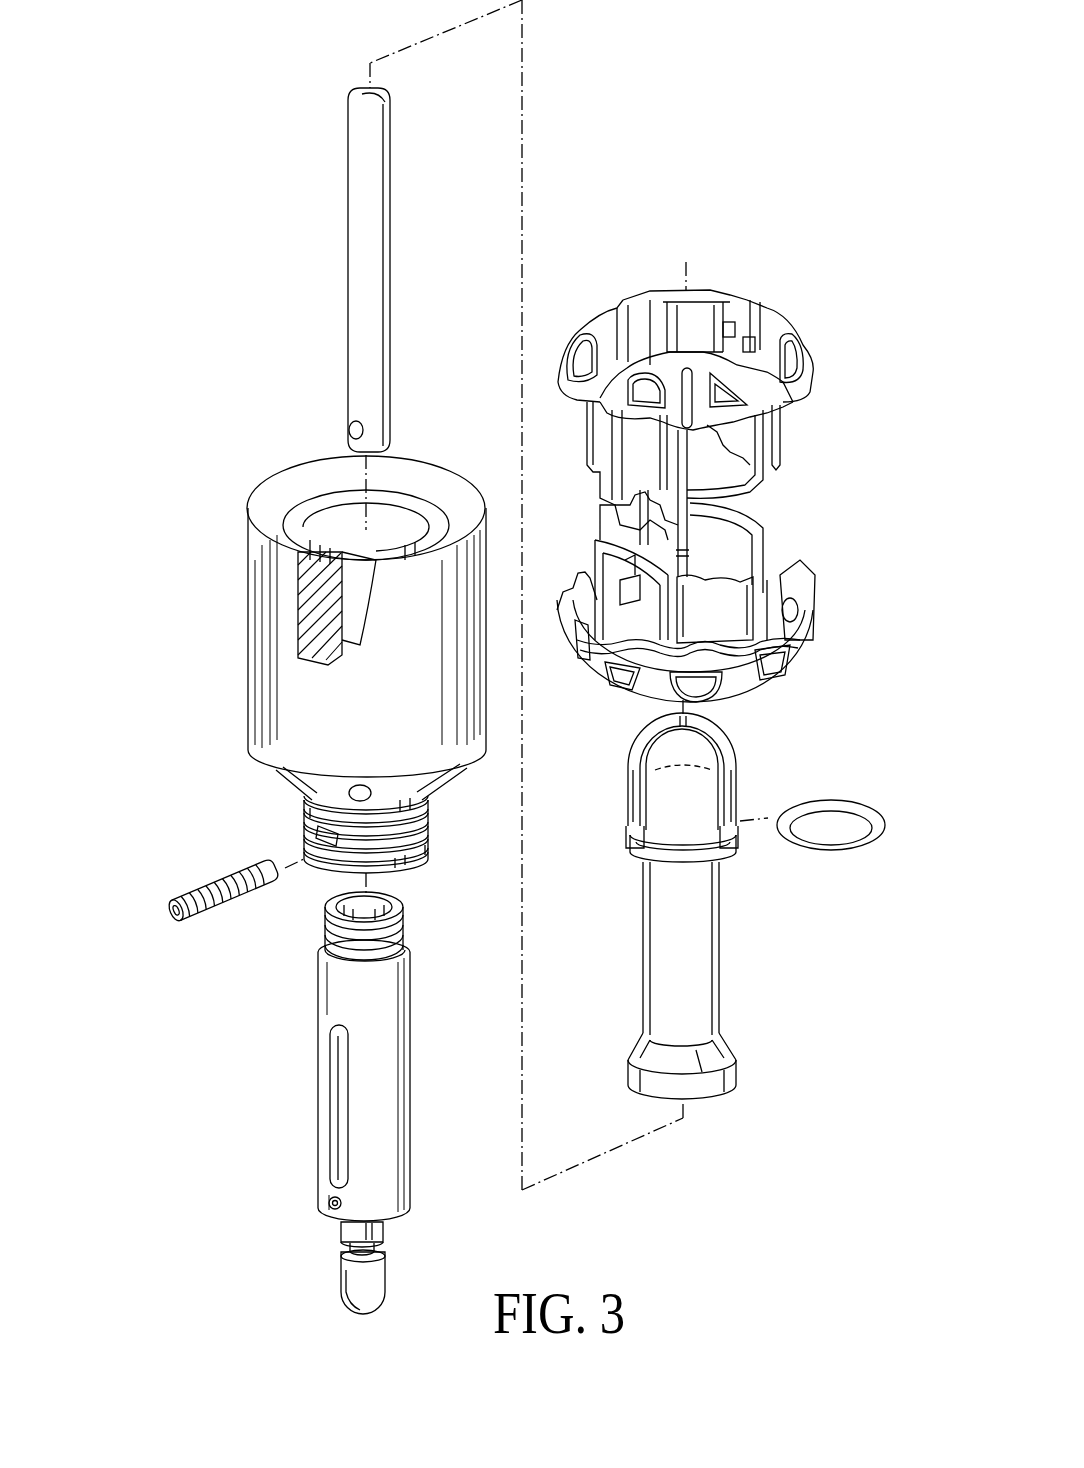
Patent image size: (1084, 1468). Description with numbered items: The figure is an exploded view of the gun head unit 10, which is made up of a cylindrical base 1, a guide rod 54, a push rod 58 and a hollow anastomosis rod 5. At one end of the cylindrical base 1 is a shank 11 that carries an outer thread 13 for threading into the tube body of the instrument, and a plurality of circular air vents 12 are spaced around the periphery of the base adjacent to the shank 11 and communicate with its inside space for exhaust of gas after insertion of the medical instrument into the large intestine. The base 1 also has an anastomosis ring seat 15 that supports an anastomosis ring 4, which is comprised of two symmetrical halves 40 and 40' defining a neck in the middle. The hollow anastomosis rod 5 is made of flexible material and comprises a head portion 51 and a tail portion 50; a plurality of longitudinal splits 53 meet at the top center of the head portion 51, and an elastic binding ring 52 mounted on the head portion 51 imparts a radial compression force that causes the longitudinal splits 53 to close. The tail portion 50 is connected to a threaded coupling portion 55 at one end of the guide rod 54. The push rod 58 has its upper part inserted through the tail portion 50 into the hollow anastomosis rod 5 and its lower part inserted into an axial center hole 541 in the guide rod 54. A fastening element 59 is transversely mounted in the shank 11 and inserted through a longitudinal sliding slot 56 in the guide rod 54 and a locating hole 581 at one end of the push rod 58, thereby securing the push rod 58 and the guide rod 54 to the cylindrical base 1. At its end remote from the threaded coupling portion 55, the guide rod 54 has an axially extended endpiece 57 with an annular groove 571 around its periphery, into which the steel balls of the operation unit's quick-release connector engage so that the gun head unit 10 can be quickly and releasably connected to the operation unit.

The cylindrical base 1 is at (262, 620).
The anastomosis ring 4 is at (868, 478).
The hollow anastomosis rod 5 is at (710, 982).
The gun head unit 10 is at (163, 1030).
The shank 11 is at (418, 862).
The circular air vents 12 is at (300, 796).
The outer thread 13 is at (428, 828).
The anastomosis ring seat 15 is at (285, 497).
The symmetrical half 40 is at (715, 407).
The symmetrical half 40' is at (723, 596).
The tail portion 50 is at (735, 1072).
The head portion 51 is at (712, 760).
The elastic binding ring 52 is at (816, 850).
The longitudinal splits 53 is at (640, 785).
The guide rod 54 is at (400, 1118).
The threaded coupling portion 55 is at (325, 932).
The longitudinal sliding slot 56 is at (338, 1085).
The endpiece 57 is at (340, 1279).
The push rod 58 is at (355, 326).
The fastening element 59 is at (222, 878).
The axial center hole 541 is at (375, 905).
The annular groove 571 is at (383, 1243).
The locating hole 581 is at (348, 432).